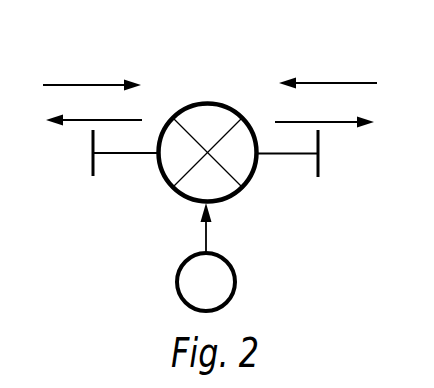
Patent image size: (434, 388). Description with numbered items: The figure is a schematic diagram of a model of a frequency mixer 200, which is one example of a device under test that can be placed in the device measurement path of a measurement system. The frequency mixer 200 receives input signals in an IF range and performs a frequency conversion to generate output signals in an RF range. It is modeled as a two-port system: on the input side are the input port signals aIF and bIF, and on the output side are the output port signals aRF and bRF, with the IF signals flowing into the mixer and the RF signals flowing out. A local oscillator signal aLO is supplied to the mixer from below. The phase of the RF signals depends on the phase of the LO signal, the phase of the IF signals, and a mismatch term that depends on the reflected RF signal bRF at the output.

The frequency mixer 200 is at (230, 38).
The local oscillator signal source aLO is at (206, 257).
The input port signal a_IF aIF is at (92, 69).
The input port signal b_IF bIF is at (94, 107).
The output port signal a_RF aRF is at (328, 67).
The output port signal b_RF bRF is at (324, 108).